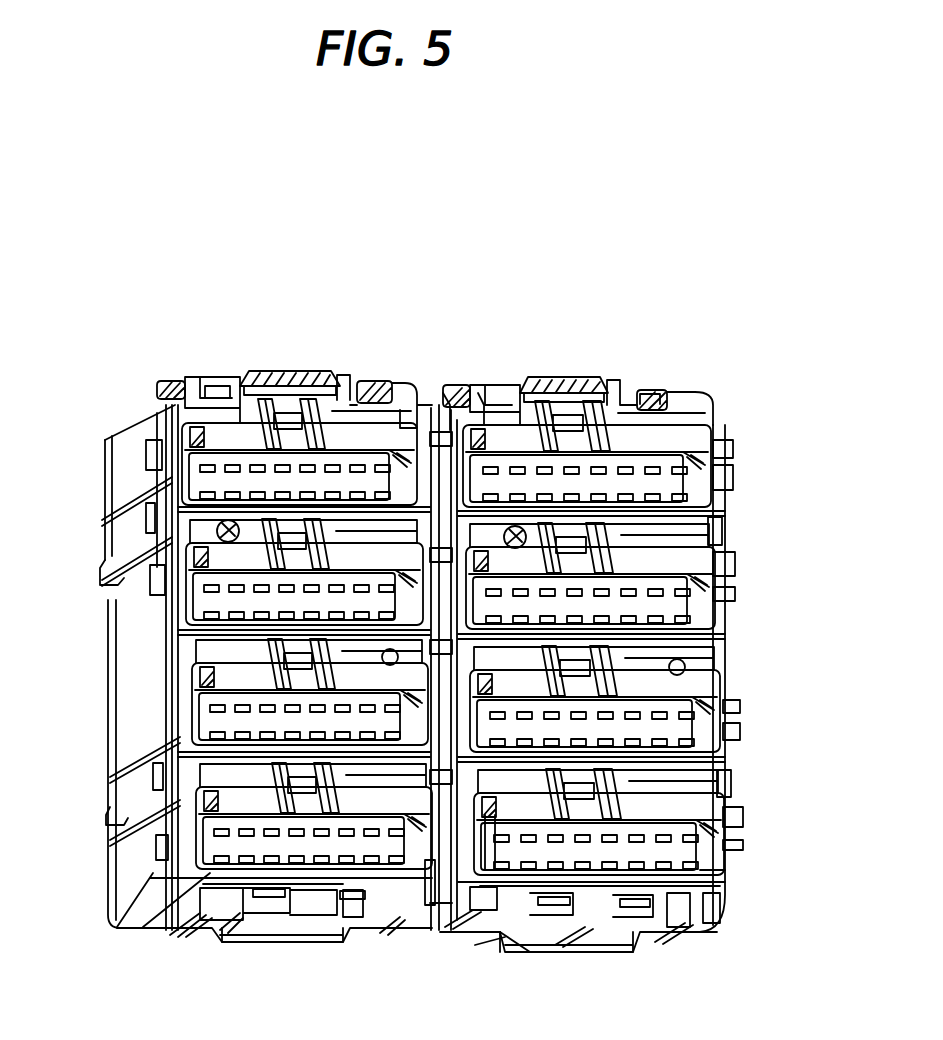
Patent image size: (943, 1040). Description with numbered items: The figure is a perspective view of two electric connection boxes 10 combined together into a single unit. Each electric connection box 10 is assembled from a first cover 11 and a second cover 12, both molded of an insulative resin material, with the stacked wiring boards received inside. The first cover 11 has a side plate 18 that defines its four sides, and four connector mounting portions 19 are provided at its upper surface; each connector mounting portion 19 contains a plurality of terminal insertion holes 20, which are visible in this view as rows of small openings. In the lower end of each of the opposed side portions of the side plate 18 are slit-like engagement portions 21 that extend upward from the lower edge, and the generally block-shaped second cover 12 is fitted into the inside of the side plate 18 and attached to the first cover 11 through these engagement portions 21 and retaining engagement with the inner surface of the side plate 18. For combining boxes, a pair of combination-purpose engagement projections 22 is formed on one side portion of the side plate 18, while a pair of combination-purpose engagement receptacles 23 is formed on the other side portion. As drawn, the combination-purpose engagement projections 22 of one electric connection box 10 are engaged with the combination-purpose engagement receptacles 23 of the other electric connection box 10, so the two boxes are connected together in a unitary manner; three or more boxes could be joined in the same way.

The electric connection box 10 is at (388, 380).
The first cover 11 is at (122, 428).
The second cover 12 is at (120, 932).
The side plate 18 is at (122, 693).
The connector mounting portion 19 is at (220, 392).
The terminal insertion hole 20 is at (282, 462).
The engagement portion 21 is at (112, 572).
The combination-purpose engagement projection 22 is at (448, 402).
The combination-purpose engagement receptacle 23 is at (482, 400).